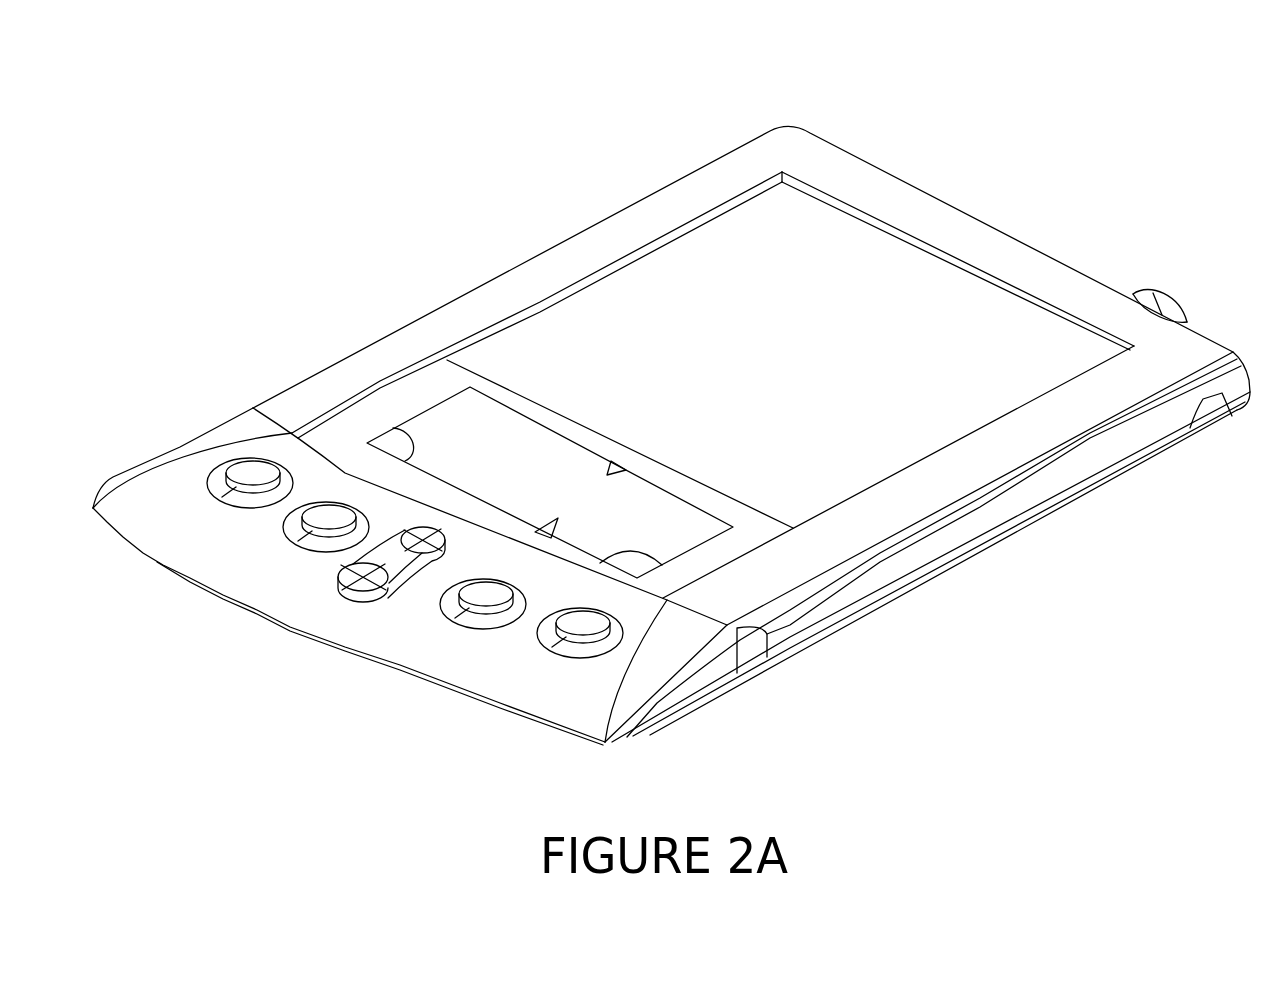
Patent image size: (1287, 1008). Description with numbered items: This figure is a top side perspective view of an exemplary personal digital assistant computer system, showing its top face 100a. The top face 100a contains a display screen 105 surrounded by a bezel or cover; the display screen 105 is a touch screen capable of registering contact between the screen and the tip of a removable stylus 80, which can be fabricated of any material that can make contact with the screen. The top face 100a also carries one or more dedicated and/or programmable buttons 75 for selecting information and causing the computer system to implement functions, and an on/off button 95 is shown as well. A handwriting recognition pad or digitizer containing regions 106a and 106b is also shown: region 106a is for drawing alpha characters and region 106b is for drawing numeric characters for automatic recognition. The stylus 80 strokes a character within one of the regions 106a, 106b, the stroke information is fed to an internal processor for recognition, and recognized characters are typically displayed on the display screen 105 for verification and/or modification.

The top face 100a is at (128, 66).
The buttons 75 is at (238, 468).
The stylus 80 is at (923, 557).
The on/off button 95 is at (1155, 291).
The display screen 105 is at (804, 264).
The region 106a is at (506, 464).
The region 106b is at (660, 536).